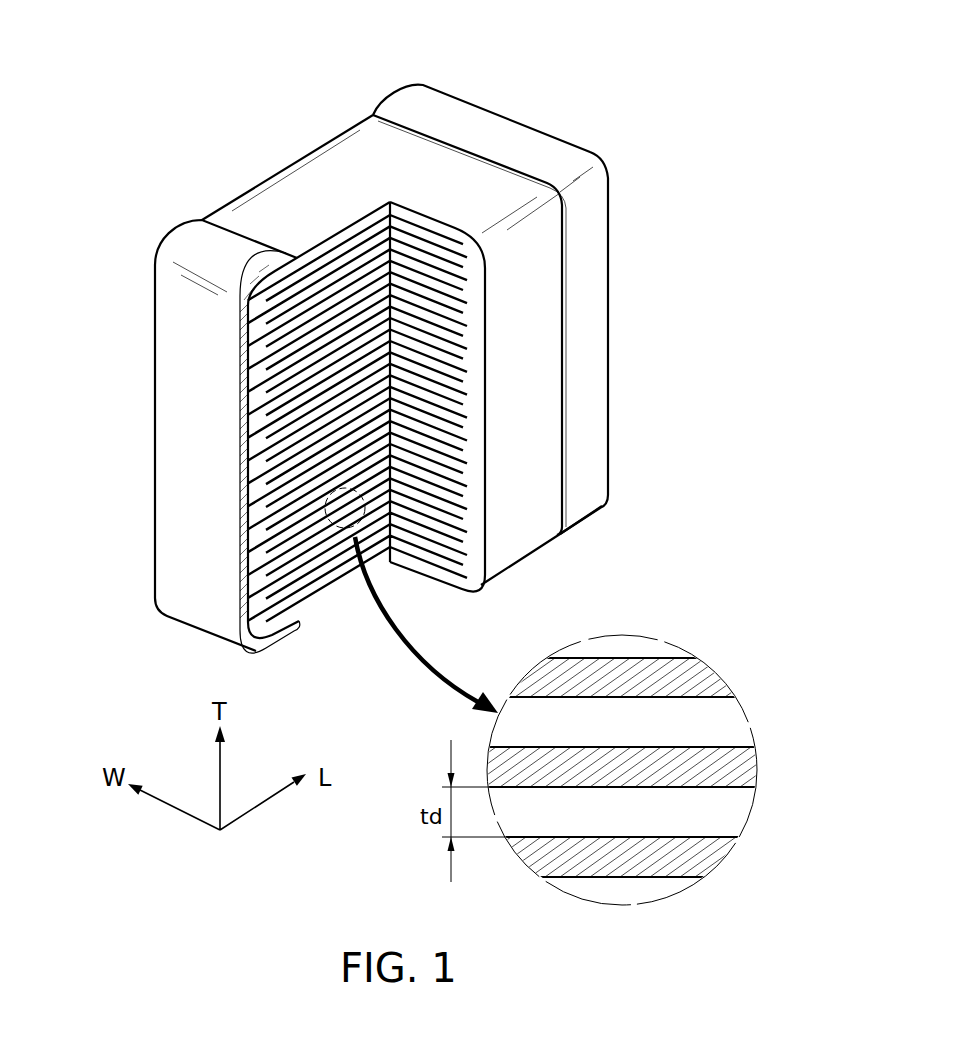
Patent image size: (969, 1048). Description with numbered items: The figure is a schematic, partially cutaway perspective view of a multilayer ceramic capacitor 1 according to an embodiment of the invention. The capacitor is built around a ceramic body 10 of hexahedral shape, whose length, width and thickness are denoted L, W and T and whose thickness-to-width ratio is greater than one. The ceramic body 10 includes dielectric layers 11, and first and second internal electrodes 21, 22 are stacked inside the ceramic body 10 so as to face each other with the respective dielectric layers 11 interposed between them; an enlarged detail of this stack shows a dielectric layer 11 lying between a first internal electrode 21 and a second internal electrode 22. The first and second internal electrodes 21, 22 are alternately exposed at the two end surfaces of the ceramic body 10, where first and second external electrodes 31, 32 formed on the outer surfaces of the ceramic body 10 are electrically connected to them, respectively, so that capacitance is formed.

The multilayer ceramic capacitor 1 is at (393, 11).
The ceramic body 10 is at (296, 140).
The dielectric layer 11 is at (715, 720).
The first internal electrode 21 is at (700, 682).
The second internal electrode 22 is at (713, 768).
The first external electrode 31 is at (200, 243).
The second external electrode 32 is at (512, 135).